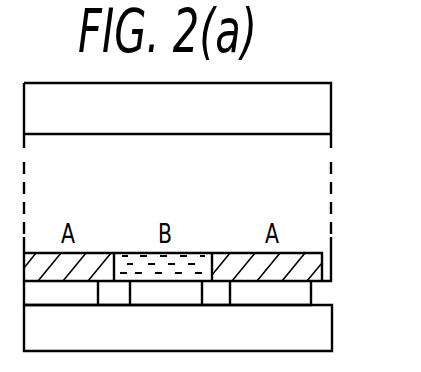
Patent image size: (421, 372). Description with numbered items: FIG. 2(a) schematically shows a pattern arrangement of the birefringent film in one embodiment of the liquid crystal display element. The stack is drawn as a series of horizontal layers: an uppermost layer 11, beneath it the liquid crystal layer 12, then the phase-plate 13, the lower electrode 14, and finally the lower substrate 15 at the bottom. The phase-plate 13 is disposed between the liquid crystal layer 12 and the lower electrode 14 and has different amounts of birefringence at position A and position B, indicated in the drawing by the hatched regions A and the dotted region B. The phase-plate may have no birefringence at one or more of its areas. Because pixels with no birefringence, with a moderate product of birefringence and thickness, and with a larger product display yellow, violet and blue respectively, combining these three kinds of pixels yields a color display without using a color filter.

The upper substrate 11 is at (312, 100).
The liquid crystal layer 12 is at (312, 149).
The phase-plate 13 is at (323, 259).
The lower electrode 14 is at (302, 293).
The lower substrate 15 is at (317, 324).